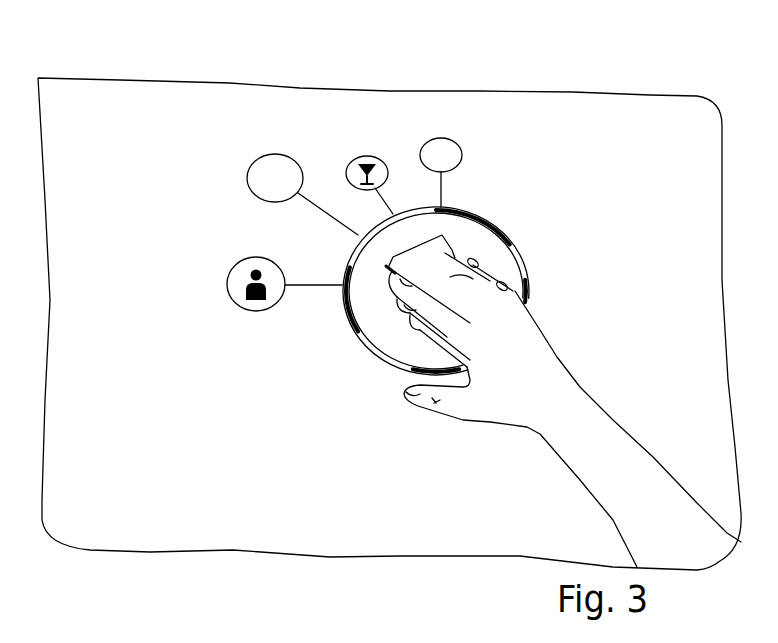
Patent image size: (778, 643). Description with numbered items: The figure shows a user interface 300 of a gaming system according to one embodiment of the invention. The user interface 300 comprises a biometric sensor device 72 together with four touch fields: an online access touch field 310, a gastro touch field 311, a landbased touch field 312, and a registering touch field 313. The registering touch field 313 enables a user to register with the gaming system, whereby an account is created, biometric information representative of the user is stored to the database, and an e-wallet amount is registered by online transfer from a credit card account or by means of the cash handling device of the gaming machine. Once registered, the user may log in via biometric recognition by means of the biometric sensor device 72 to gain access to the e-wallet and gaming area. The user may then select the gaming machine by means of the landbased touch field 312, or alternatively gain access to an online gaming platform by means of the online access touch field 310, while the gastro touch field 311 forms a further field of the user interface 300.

The user interface 300 is at (648, 75).
The online access touch field 310 is at (440, 138).
The gastro touch field 311 is at (365, 156).
The landbased touch field 312 is at (273, 154).
The registering touch field 313 is at (238, 263).
The biometric sensor device 72 is at (443, 237).